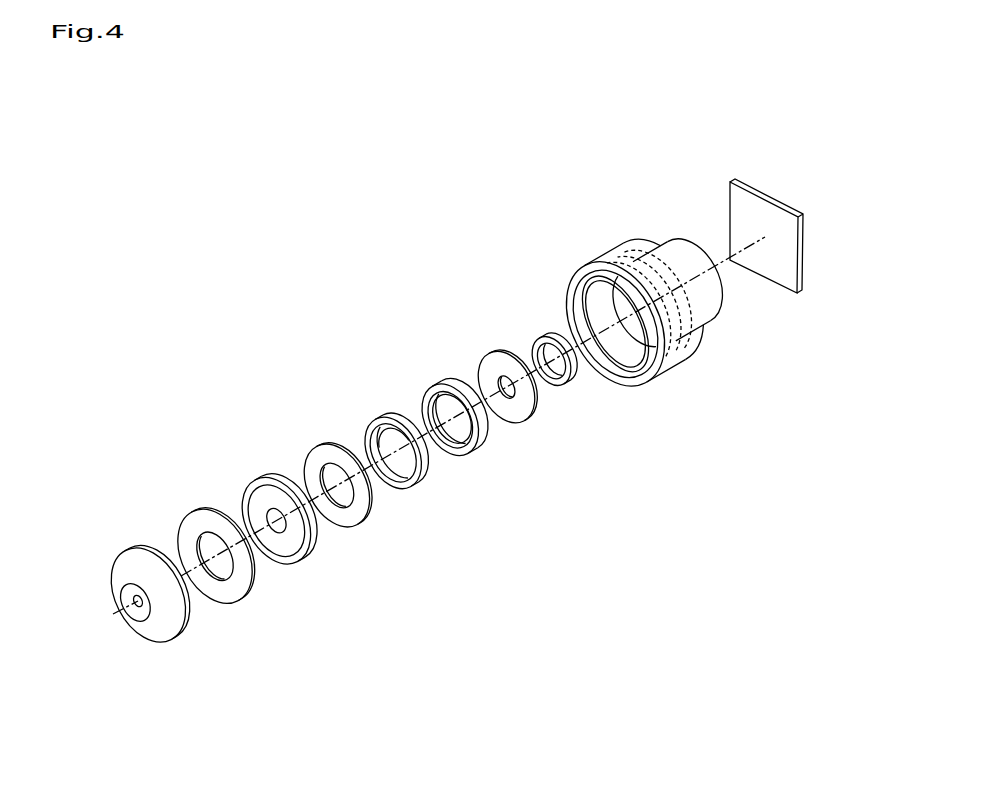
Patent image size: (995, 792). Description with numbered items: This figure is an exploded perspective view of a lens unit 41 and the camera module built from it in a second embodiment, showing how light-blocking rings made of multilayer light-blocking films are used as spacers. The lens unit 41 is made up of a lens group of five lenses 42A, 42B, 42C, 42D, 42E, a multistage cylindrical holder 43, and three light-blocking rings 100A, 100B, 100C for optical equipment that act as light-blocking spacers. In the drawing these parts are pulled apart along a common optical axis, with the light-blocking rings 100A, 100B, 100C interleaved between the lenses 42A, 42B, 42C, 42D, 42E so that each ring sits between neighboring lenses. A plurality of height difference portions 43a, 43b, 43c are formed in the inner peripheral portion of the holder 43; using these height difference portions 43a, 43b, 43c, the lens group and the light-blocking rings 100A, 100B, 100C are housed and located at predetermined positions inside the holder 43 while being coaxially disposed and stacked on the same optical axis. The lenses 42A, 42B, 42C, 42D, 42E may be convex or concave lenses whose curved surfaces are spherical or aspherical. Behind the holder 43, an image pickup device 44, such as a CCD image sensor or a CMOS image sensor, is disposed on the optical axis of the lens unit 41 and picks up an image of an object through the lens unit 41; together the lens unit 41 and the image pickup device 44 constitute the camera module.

The lens unit 41 is at (354, 325).
The lens 42A is at (138, 546).
The lens 42B is at (270, 478).
The lens 42C is at (380, 414).
The lens 42D is at (434, 380).
The lens 42E is at (546, 337).
The light-blocking ring for optical equipment 100A is at (238, 606).
The light-blocking ring for optical equipment 100B is at (364, 530).
The light-blocking ring for optical equipment 100C is at (527, 428).
The multistage cylindrical holder 43 is at (635, 320).
The height difference portion 43a is at (606, 372).
The height difference portion 43b is at (648, 380).
The height difference portion 43c is at (636, 300).
The image pickup device 44 is at (766, 200).